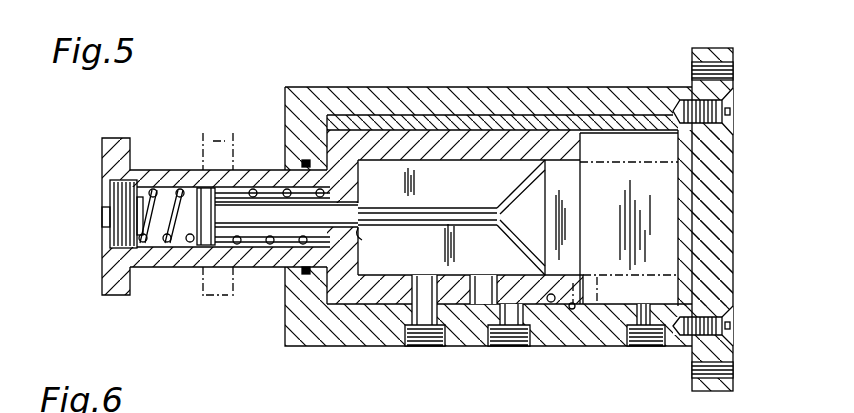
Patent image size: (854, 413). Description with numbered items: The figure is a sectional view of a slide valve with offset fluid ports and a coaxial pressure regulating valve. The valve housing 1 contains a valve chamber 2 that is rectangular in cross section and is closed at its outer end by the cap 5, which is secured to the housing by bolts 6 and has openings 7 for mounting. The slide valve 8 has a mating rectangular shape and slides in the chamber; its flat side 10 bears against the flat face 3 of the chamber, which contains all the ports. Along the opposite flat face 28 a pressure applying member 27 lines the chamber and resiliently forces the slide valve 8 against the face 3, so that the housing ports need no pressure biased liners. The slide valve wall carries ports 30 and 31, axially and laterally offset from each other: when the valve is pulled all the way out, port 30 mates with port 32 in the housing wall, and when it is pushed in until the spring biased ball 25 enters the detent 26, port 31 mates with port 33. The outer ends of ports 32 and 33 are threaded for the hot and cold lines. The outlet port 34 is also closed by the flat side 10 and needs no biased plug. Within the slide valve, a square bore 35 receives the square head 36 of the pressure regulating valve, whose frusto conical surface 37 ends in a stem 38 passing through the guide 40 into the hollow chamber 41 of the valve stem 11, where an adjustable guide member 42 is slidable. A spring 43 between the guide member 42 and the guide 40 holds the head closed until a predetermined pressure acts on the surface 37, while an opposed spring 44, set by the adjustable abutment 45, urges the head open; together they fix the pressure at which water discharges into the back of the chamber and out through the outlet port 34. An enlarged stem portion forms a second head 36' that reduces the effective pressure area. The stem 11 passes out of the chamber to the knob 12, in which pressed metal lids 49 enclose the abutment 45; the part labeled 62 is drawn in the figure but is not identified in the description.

The valve housing 1 is at (588, 98).
The valve chamber 2 is at (658, 265).
The flat face 3 is at (370, 300).
The cap 5 is at (735, 203).
The bolts 6 is at (735, 103).
The openings 7 is at (720, 74).
The slide valve 8 is at (350, 135).
The flat side 10 is at (378, 305).
The stem 11 is at (213, 268).
The knob 12 is at (116, 295).
The spring biased detent ball 25 is at (553, 298).
The detent recess 26 is at (575, 310).
The pressure applying member 27 is at (617, 138).
The flat face 28 is at (484, 118).
The port 30 is at (425, 287).
The port 31 is at (483, 283).
The port 32 is at (430, 347).
The port 33 is at (509, 347).
The outlet port 34 is at (648, 315).
The bore 35 is at (455, 272).
The square head 36 is at (582, 218).
The second head 36' is at (376, 237).
The frusto conical valve surface 37 is at (525, 192).
The stem 38 is at (457, 212).
The guide 40 is at (357, 200).
The hollow chamber 41 is at (192, 215).
The adjustable guide member 42 is at (212, 205).
The spring 43 is at (257, 188).
The spring 44 is at (170, 232).
The adjustable abutment 45 is at (120, 232).
The pressed metal lids 49 is at (108, 196).
The piston 62 is at (185, 212).